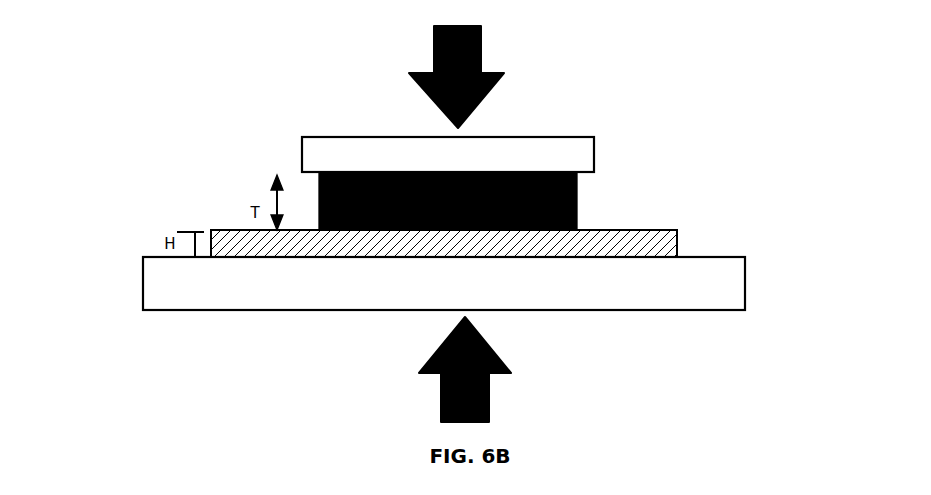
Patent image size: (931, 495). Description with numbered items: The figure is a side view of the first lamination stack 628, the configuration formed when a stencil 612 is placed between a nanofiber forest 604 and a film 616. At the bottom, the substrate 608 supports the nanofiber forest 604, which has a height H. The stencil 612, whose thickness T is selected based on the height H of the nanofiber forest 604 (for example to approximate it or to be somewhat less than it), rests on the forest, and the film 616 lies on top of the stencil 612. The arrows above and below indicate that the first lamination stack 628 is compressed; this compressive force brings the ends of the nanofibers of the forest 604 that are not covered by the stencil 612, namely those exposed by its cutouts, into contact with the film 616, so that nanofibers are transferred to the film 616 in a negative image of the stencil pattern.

The film 616 is at (594, 155).
The stencil 612 is at (577, 198).
The nanofiber forest 604 is at (677, 243).
The substrate 608 is at (745, 283).
The first lamination stack 628 is at (132, 172).